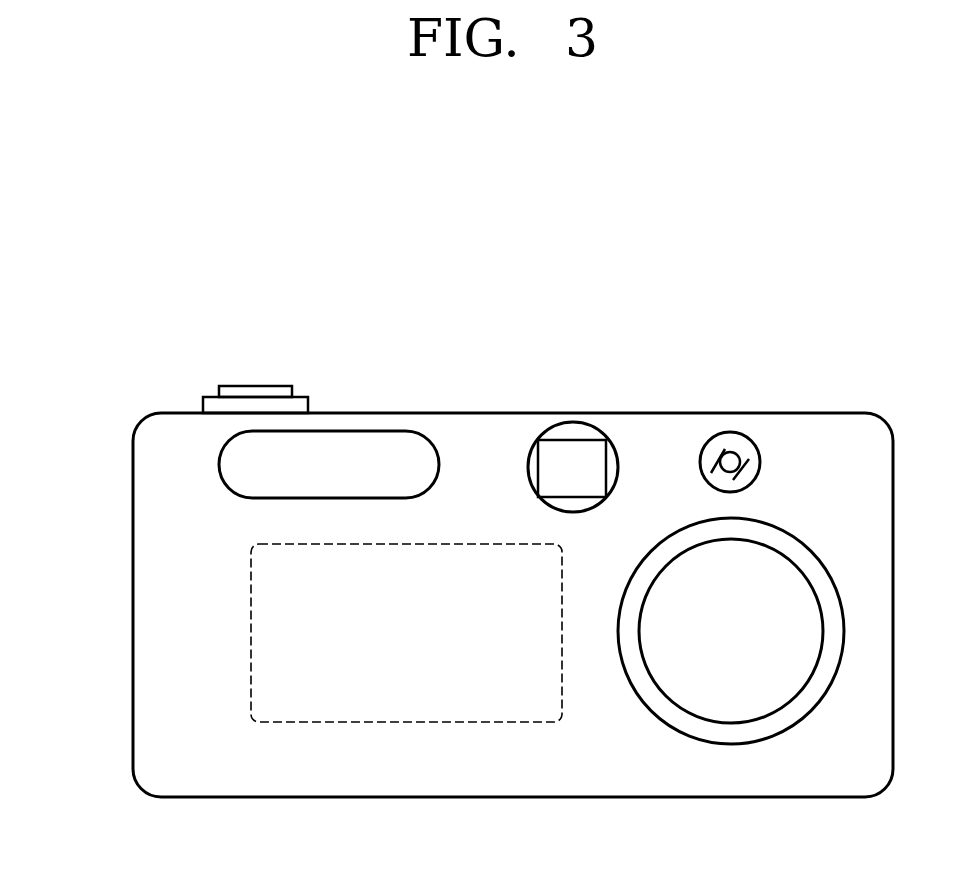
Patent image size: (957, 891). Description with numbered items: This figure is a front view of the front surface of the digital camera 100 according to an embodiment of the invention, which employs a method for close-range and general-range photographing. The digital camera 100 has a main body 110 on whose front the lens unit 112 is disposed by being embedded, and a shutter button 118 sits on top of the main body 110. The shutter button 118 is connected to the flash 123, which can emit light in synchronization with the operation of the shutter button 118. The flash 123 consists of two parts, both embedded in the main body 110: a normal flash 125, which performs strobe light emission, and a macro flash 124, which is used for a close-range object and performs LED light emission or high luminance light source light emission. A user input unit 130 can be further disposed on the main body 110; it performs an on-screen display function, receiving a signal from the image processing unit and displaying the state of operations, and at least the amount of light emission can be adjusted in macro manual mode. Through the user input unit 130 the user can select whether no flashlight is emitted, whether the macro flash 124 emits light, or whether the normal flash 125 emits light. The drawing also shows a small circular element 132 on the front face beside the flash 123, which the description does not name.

The digital camera 100 is at (466, 545).
The main body 110 is at (835, 465).
The lens unit 112 is at (737, 738).
The shutter button 118 is at (260, 397).
The flash 123 is at (489, 371).
The macro flash 124 is at (730, 395).
The normal flash 125 is at (410, 448).
The user input unit 130 is at (430, 702).
The viewfinder 132 is at (573, 452).